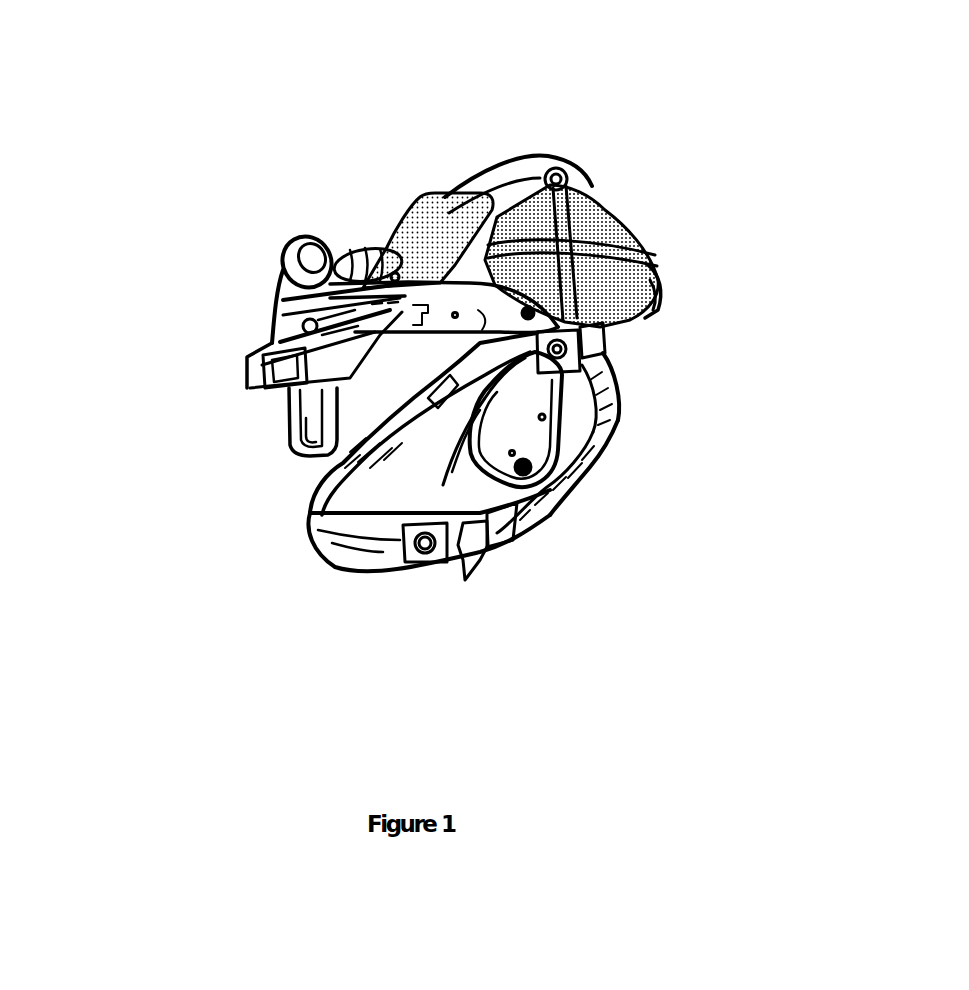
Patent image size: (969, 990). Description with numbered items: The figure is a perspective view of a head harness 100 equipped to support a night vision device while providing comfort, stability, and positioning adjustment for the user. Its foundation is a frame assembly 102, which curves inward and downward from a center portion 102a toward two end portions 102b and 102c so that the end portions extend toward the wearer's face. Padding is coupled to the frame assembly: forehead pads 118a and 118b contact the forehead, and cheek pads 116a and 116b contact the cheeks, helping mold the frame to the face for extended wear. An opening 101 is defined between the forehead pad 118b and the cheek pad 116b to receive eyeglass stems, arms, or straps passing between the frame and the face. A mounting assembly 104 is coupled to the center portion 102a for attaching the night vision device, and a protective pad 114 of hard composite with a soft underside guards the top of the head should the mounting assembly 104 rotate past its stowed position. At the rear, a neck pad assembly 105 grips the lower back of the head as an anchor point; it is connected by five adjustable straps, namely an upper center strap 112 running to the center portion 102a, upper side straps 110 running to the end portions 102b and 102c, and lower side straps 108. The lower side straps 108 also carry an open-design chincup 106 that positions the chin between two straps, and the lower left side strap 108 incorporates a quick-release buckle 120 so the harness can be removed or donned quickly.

The head harness 100 is at (450, 362).
The opening 101 is at (433, 463).
The frame assembly 102 is at (582, 395).
The center portion 102a is at (404, 308).
The end portion 102b is at (340, 458).
The end portion 102c is at (262, 268).
The mounting assembly 104 is at (253, 330).
The neck pad assembly 105 is at (637, 217).
The chincup 106 is at (397, 583).
The lower side strap 108 is at (563, 517).
The upper side strap 110 is at (667, 293).
The upper center strap 112 is at (513, 147).
The protective pad 114 is at (402, 205).
The cheek pad 116a is at (277, 437).
The cheek pad 116b is at (457, 458).
The forehead pad 118a is at (325, 250).
The forehead pad 118b is at (580, 173).
The quick-release buckle 120 is at (622, 447).